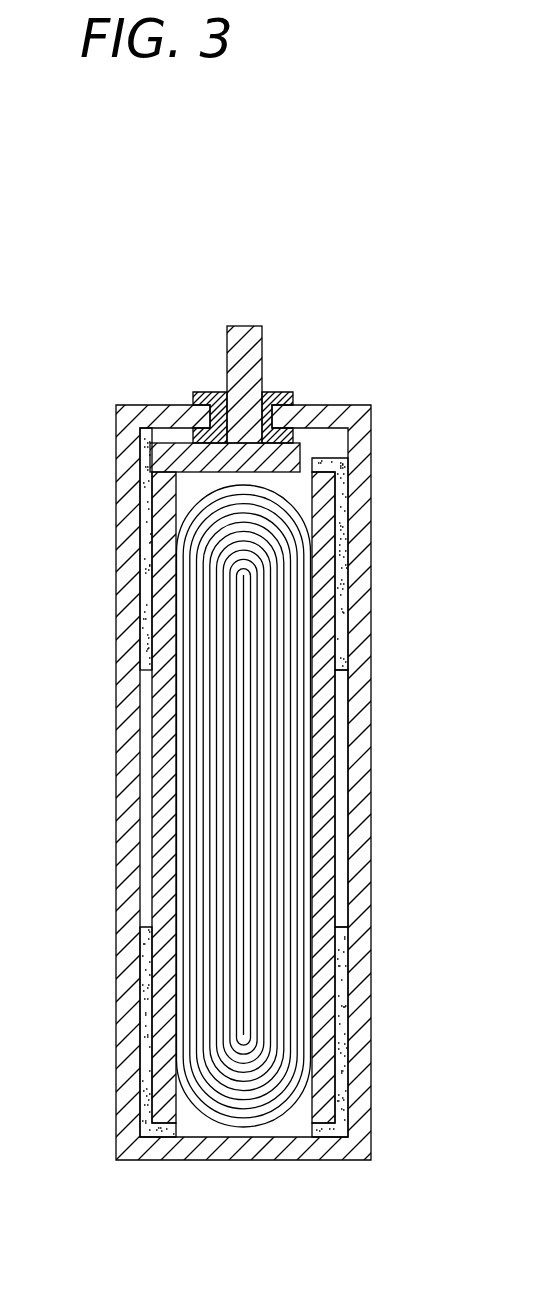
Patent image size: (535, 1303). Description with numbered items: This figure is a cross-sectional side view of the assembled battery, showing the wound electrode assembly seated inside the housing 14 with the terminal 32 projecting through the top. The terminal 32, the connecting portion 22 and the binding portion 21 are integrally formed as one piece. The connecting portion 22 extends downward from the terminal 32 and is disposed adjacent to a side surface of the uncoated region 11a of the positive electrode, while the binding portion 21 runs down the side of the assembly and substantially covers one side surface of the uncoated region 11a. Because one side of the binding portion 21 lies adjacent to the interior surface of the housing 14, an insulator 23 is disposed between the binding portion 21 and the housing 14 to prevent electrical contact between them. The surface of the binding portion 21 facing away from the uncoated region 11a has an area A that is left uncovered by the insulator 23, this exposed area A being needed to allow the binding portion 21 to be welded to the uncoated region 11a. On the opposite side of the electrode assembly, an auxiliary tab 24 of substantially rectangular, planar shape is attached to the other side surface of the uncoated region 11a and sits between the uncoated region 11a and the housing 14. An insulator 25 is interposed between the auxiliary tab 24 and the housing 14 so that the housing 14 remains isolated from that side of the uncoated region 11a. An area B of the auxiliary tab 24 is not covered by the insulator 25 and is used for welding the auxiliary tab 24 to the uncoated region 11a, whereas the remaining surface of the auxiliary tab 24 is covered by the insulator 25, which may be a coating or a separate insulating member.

The housing 14 is at (120, 546).
The connecting portion 22 is at (188, 453).
The terminal 32 is at (262, 352).
The binding portion 21 is at (158, 636).
The insulator 25 is at (345, 558).
The insulator 23 is at (143, 1013).
The auxiliary tab 24 is at (328, 867).
The area A is at (153, 775).
The area B is at (338, 775).
The uncoated region 11a is at (257, 1057).